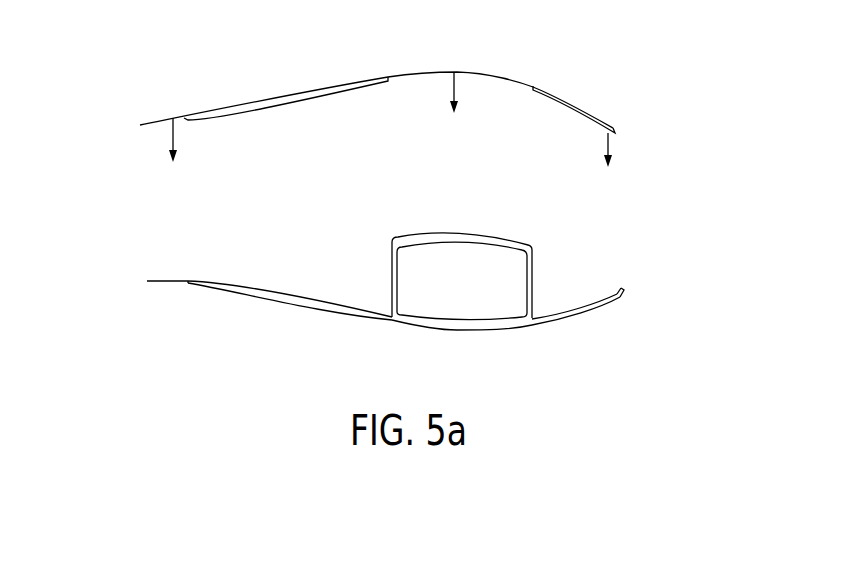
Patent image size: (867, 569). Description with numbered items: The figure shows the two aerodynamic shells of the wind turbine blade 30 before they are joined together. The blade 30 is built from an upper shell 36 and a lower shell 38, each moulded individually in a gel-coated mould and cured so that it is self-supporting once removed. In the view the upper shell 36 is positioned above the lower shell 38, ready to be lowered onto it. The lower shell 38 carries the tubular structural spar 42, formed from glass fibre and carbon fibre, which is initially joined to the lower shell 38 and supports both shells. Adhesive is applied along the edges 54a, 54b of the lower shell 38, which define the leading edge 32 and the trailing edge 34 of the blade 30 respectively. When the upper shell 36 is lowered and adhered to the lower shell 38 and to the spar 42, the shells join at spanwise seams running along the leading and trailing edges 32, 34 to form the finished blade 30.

The blade 30 is at (707, 164).
The leading edge 32 is at (645, 292).
The trailing edge 34 is at (109, 283).
The upper shell 36 is at (427, 72).
The lower shell 38 is at (366, 317).
The tubular structural spar 42 is at (492, 315).
The edge of the lower shell 54a is at (625, 283).
The edge of the lower shell 54b is at (150, 273).